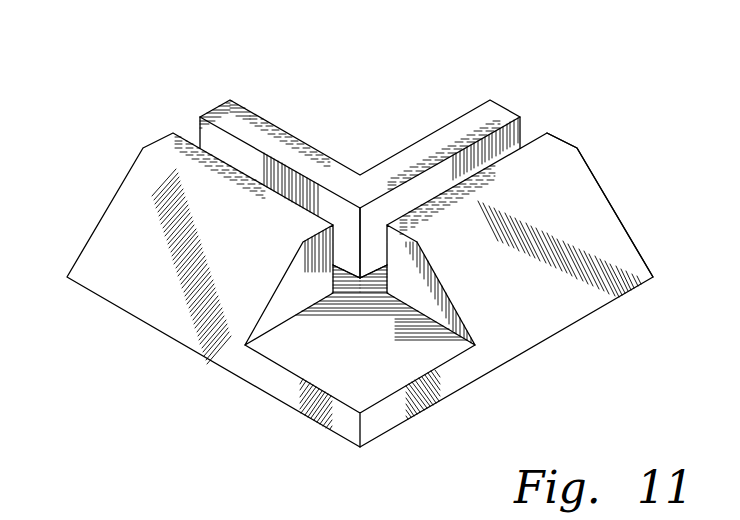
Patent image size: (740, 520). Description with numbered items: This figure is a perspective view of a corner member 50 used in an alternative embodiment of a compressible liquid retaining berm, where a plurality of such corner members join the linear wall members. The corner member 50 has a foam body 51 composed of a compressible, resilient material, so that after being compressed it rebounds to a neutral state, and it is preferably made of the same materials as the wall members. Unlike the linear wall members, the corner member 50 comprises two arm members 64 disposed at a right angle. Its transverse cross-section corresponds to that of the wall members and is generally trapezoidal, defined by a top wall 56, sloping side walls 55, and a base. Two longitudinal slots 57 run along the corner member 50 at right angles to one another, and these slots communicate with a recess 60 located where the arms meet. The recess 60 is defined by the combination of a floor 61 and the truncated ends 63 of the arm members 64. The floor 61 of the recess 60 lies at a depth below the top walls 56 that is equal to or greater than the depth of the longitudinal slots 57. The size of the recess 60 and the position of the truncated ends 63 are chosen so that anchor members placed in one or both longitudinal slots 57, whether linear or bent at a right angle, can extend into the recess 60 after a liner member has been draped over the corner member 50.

The corner member 50 is at (170, 362).
The foam body 51 is at (617, 210).
The sloping side walls 55 is at (103, 273).
The top wall 56 is at (233, 117).
The longitudinal slots 57 is at (213, 135).
The recess 60 is at (333, 372).
The floor 61 is at (362, 398).
The truncated ends 63 is at (273, 313).
The arm members 64 is at (318, 130).